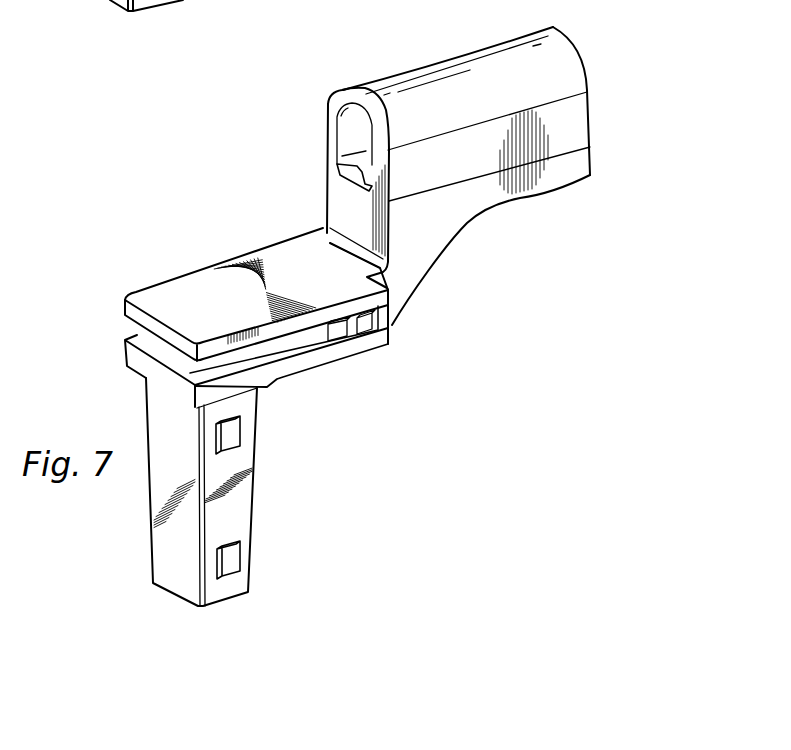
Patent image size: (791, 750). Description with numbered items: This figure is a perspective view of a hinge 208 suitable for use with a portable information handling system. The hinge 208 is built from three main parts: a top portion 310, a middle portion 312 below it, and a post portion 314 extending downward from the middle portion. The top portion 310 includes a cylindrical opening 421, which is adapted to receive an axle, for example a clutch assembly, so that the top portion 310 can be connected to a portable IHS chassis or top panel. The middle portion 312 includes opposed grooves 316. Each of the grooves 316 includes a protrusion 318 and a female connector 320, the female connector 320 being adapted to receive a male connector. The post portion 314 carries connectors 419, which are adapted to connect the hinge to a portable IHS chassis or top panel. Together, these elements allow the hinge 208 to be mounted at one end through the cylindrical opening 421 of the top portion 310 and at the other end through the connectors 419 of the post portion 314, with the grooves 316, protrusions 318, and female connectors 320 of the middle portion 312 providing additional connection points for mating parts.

The hinge 208 is at (436, 58).
The top portion 310 is at (576, 117).
The middle portion 312 is at (192, 284).
The post portion 314 is at (172, 584).
The grooves 316 is at (283, 344).
The protrusion 318 is at (345, 328).
The female connector 320 is at (392, 318).
The connectors 419 is at (234, 437).
The cylindrical opening 421 is at (352, 129).